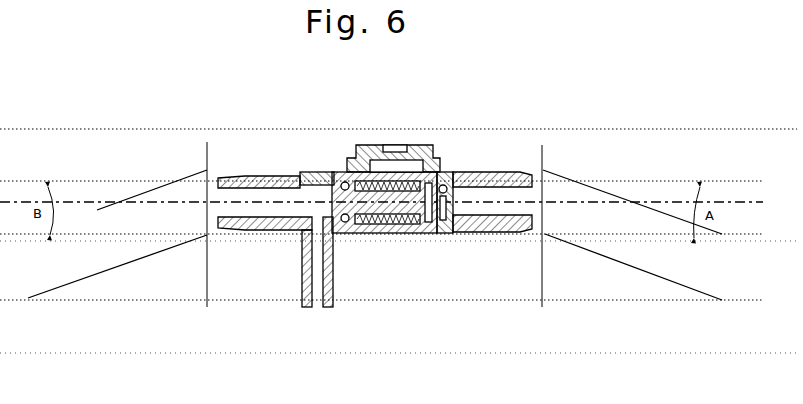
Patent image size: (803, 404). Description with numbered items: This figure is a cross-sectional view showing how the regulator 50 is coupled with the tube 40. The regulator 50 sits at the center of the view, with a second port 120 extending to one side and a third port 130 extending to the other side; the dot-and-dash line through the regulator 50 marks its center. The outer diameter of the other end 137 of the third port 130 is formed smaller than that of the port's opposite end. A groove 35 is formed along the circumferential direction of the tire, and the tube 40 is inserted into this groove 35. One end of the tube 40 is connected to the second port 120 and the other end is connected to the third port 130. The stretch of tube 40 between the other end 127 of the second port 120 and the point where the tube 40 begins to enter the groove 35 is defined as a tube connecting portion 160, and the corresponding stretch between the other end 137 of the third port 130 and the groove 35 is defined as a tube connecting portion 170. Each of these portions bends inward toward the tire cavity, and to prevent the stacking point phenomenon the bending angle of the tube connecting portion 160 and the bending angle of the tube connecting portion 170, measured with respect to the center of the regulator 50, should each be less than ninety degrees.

The groove 35 is at (264, 279).
The tube 40 is at (742, 302).
The regulator 50 is at (317, 167).
The second port 120 is at (487, 173).
The other end of the second port 127 is at (532, 173).
The third port 130 is at (258, 173).
The other end of the third port 137 is at (219, 174).
The tube connecting portion 160 is at (573, 180).
The tube connecting portion 170 is at (177, 180).